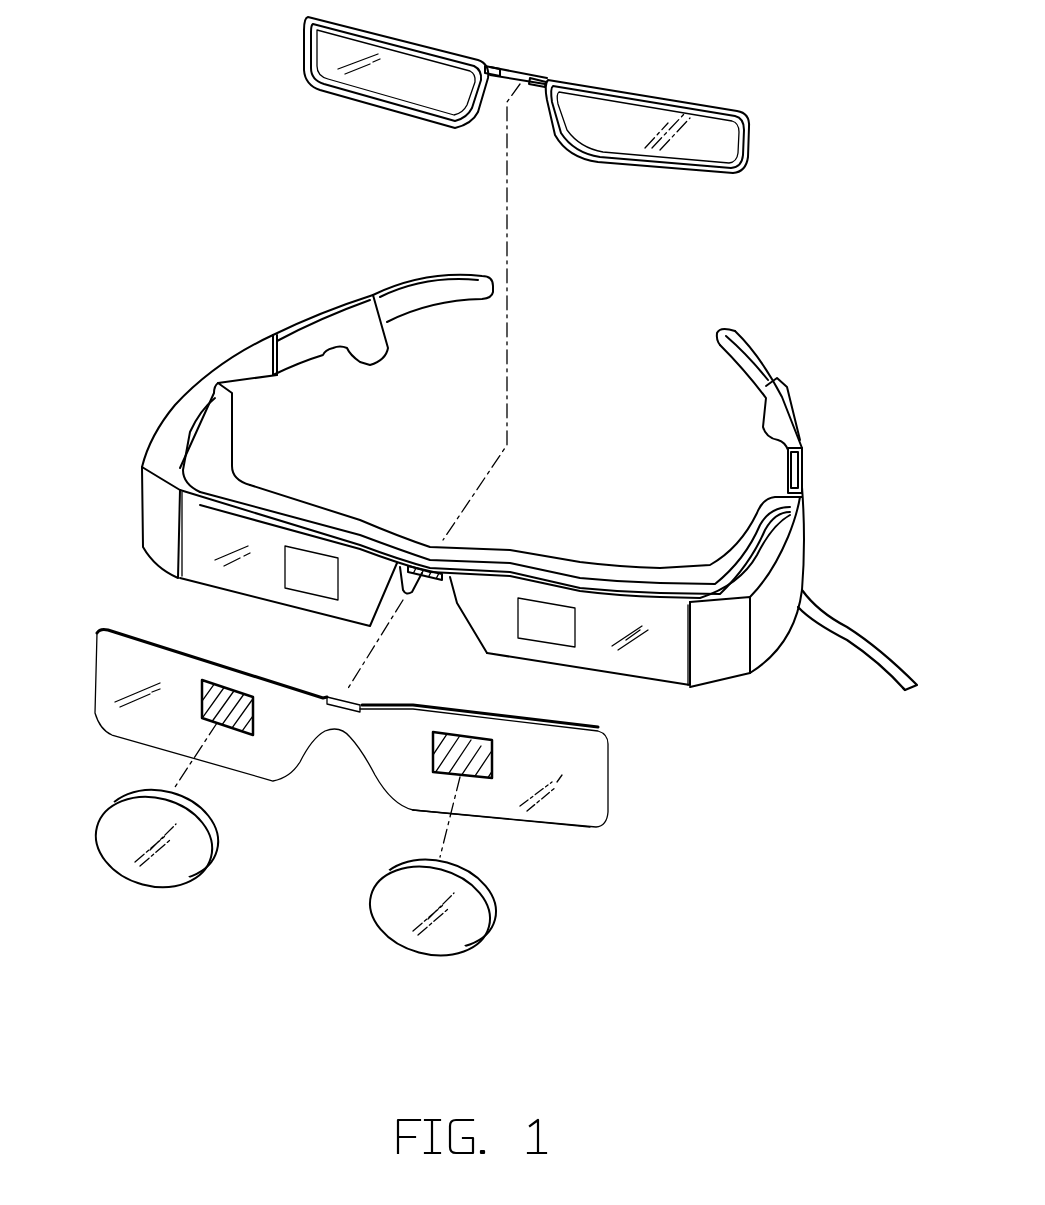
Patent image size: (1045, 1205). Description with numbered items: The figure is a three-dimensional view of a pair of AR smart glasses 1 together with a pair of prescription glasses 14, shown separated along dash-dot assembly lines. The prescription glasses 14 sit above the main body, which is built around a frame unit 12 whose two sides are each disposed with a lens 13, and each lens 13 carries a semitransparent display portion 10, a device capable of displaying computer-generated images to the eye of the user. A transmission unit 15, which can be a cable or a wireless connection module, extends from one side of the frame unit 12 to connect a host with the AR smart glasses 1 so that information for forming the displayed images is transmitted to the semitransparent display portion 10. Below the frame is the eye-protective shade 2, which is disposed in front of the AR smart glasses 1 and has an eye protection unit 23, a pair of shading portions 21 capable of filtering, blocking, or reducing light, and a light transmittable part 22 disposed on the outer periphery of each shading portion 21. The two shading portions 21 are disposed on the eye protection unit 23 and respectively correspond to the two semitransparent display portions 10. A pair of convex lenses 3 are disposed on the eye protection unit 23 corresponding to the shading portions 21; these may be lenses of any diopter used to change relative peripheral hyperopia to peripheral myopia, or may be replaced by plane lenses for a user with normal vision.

The AR smart glasses 1 is at (818, 319).
The eye-protective shade 2 is at (388, 731).
The convex lenses 3 is at (117, 817).
The semitransparent display portion 10 is at (303, 563).
The frame unit 12 is at (430, 547).
The lens 13 is at (215, 517).
The prescription glasses 14 is at (600, 80).
The transmission unit 15 is at (850, 637).
The shading portions 21 is at (223, 690).
The light transmittable part 22 is at (147, 728).
The eye protection unit 23 is at (573, 832).